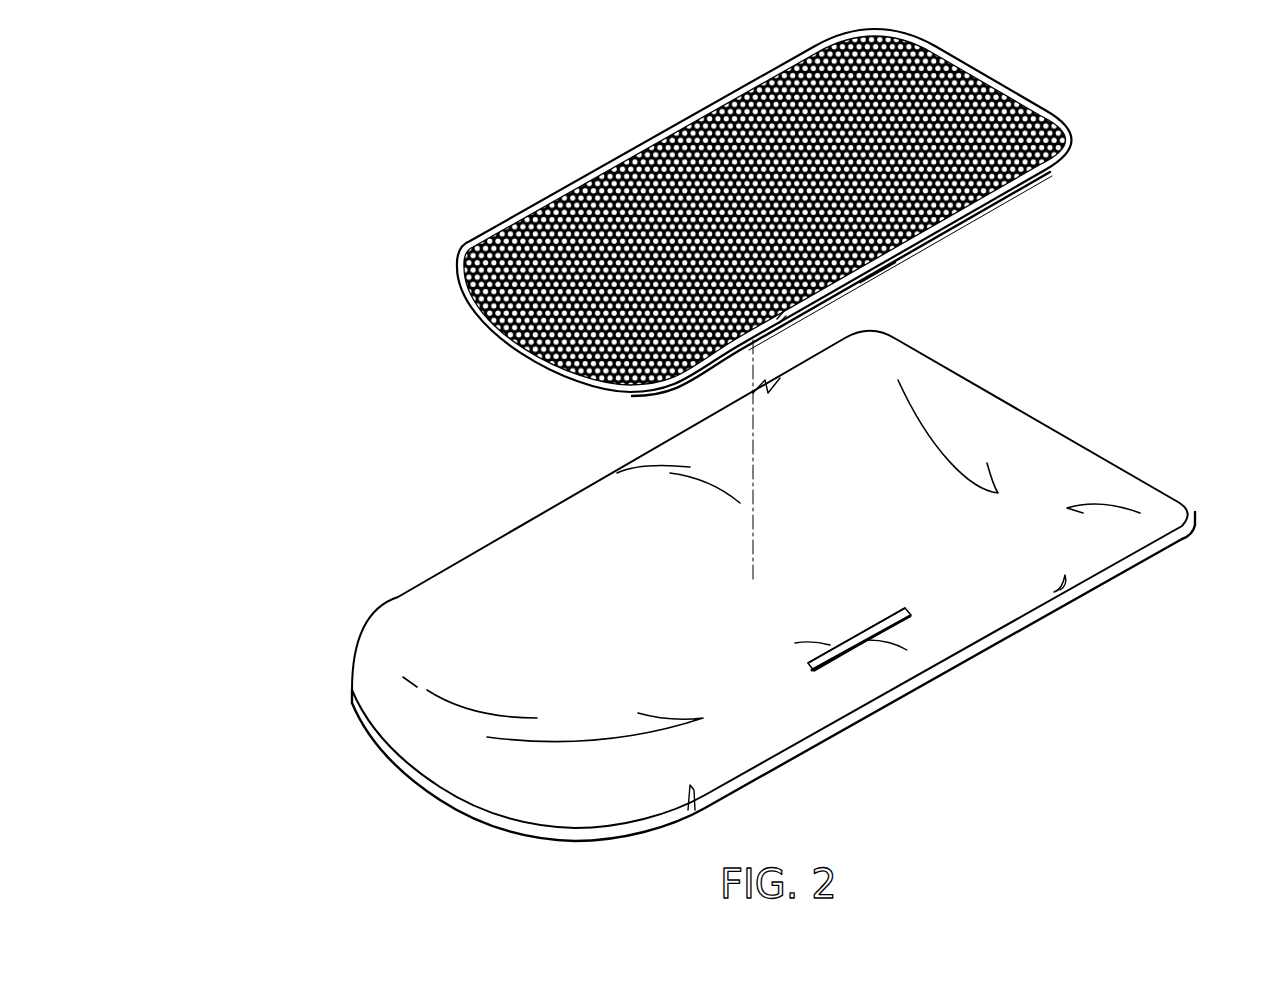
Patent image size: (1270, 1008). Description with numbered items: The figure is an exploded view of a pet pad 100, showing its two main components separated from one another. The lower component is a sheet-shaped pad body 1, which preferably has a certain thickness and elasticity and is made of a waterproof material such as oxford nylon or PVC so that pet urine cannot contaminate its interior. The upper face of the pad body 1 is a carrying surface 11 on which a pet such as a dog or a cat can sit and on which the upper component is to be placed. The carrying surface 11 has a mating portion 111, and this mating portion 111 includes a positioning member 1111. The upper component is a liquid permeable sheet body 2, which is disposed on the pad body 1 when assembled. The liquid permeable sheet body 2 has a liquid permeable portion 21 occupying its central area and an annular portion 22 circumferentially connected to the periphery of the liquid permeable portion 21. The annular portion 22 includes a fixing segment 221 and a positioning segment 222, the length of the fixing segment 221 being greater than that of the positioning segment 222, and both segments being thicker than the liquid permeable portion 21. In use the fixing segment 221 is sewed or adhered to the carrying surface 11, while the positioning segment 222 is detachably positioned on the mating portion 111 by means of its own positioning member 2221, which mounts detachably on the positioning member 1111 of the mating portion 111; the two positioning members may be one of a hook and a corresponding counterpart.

The pet pad 100 is at (328, 154).
The pad body 1 is at (346, 639).
The carrying surface 11 is at (420, 762).
The mating portion 111 is at (850, 652).
The positioning member 1111 is at (923, 622).
The liquid permeable sheet body 2 is at (444, 272).
The liquid permeable portion 21 is at (552, 208).
The annular portion 22 is at (1033, 210).
The fixing segment 221 is at (600, 167).
The positioning segment 222 is at (917, 247).
The positioning member 2221 is at (877, 270).